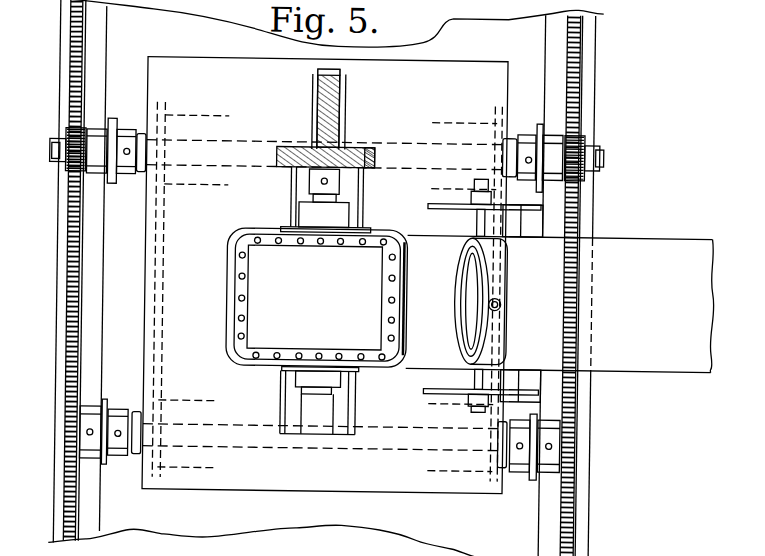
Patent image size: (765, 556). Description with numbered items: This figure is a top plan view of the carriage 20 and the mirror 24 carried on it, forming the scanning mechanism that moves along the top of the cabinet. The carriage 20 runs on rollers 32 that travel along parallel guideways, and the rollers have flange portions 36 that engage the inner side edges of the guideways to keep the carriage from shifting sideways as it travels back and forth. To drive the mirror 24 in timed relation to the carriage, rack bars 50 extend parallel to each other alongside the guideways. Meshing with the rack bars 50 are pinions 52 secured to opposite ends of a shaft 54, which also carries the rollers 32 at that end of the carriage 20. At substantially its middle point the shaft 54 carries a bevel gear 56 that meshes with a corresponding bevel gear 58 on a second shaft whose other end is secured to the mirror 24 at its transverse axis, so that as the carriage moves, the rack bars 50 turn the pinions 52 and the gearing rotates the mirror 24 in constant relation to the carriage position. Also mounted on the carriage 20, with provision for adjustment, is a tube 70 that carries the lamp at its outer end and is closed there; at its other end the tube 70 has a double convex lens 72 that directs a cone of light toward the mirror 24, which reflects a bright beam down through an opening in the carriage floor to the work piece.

The carriage 20 is at (169, 320).
The mirror 24 is at (228, 285).
The rollers 32 is at (93, 137).
The flange portions 36 is at (106, 131).
The rack bars 50 is at (68, 337).
The pinions 52 is at (66, 144).
The shaft 54 is at (50, 155).
The bevel gear 56 is at (335, 88).
The bevel gear 58 is at (361, 148).
The tube 70 is at (625, 234).
The double convex lens 72 is at (473, 296).